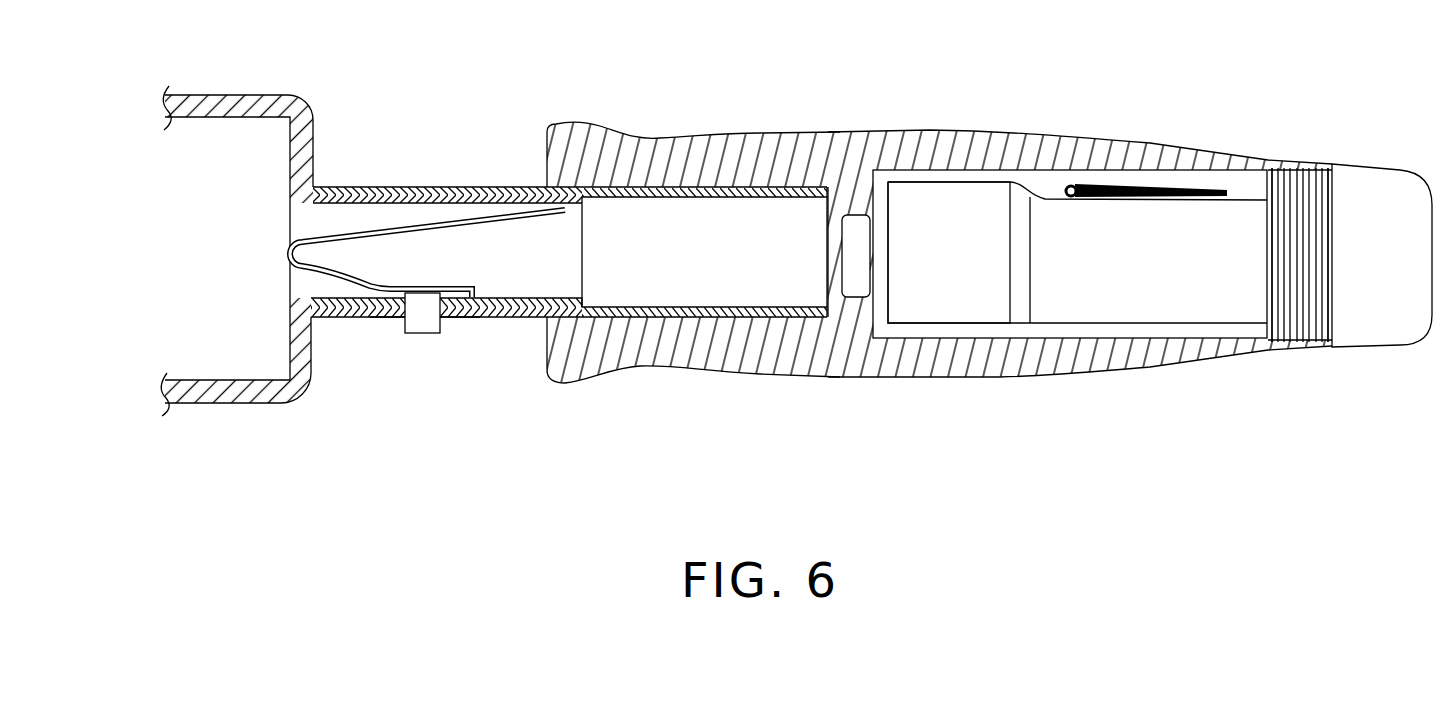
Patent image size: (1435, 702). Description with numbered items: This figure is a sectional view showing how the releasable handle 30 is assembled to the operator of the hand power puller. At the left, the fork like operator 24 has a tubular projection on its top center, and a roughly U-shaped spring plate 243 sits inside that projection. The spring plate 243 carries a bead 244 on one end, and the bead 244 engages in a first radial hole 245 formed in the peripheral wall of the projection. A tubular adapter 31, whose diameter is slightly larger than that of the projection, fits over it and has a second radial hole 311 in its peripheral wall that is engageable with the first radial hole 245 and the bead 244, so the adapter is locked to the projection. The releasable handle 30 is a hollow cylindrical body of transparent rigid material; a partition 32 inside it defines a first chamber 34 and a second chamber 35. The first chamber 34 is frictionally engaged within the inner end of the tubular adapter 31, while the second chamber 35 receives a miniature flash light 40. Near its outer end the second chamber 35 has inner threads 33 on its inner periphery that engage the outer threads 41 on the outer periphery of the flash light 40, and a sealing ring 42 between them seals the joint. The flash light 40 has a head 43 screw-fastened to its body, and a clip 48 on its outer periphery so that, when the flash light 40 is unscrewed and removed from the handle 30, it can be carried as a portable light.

The fork like operator 24 is at (314, 160).
The spring plate 243 is at (416, 226).
The bead 244 is at (424, 320).
The first radial hole 245 is at (398, 317).
The tubular adapter 31 is at (501, 187).
The second radial hole 311 is at (452, 318).
The first chamber 34 is at (678, 187).
The releasable handle 30 is at (928, 150).
The partition 32 is at (838, 262).
The second chamber 35 is at (1101, 323).
The head 43 is at (953, 307).
The miniature flash light 40 is at (1083, 238).
The clip 48 is at (1150, 186).
The inner threads 33 is at (1287, 165).
The outer threads 41 is at (1300, 255).
The sealing ring 42 is at (1334, 163).